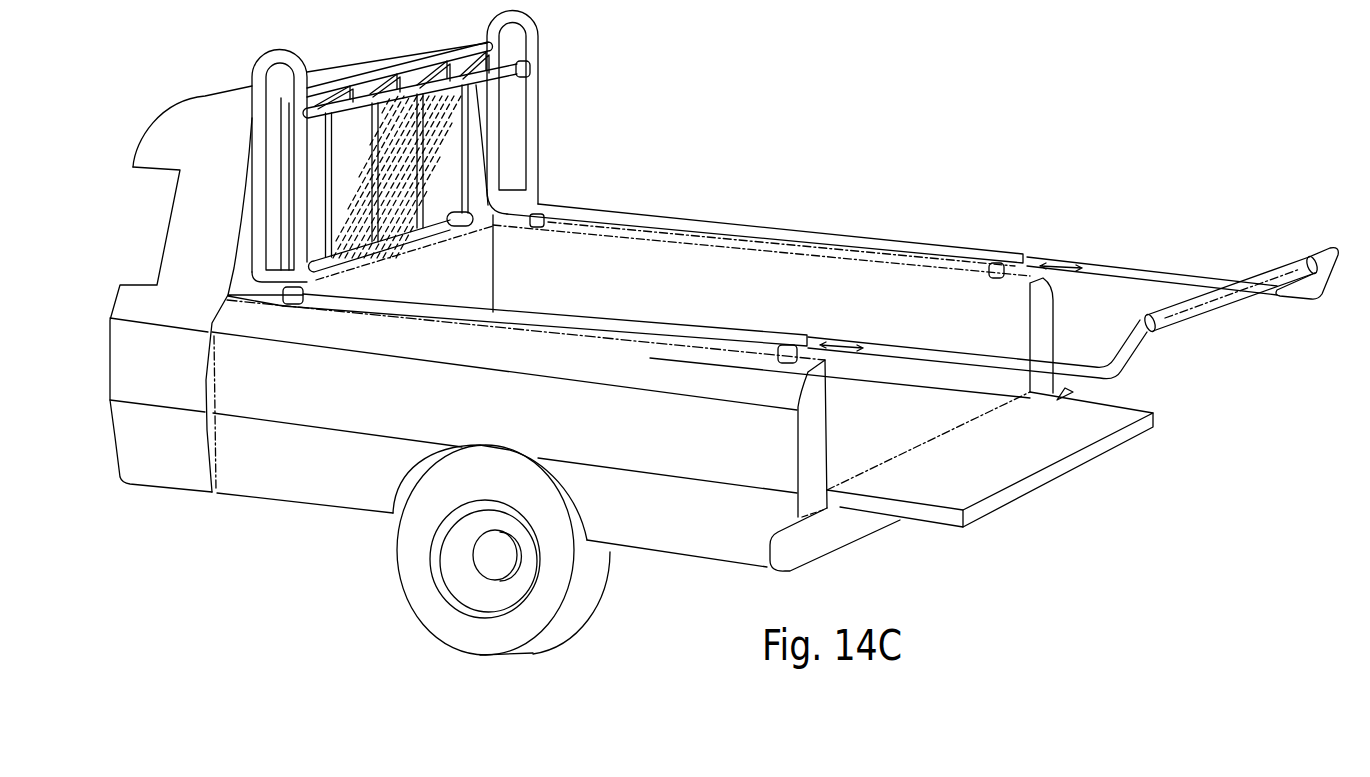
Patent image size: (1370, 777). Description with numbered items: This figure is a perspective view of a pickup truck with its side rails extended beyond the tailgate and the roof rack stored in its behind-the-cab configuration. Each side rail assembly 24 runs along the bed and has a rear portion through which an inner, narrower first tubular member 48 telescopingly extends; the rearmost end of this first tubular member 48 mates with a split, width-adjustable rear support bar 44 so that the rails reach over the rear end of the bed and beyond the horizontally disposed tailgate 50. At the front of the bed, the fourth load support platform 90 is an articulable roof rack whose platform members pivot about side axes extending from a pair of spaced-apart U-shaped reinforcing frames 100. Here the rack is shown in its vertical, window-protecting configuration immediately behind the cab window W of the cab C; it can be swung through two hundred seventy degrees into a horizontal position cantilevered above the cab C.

The cab C is at (210, 100).
The cab window W is at (440, 203).
The side rail assembly 24 is at (612, 217).
The rear support bar 44 is at (1210, 307).
The first tubular member 48 is at (1120, 270).
The tailgate 50 is at (1047, 477).
The fourth load support platform 90 is at (377, 220).
The U-shaped reinforcing frames 100 is at (537, 90).